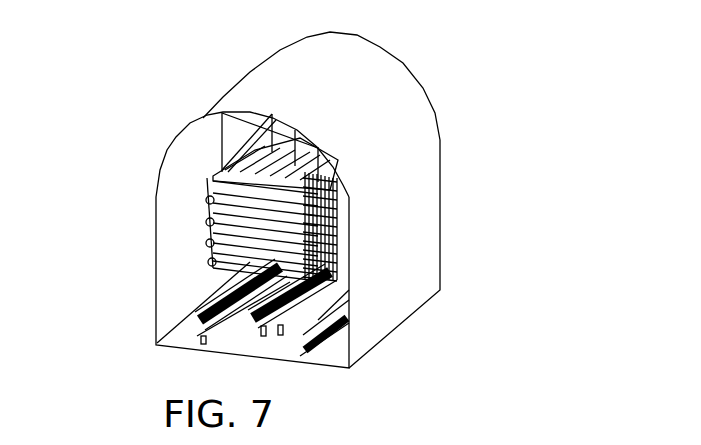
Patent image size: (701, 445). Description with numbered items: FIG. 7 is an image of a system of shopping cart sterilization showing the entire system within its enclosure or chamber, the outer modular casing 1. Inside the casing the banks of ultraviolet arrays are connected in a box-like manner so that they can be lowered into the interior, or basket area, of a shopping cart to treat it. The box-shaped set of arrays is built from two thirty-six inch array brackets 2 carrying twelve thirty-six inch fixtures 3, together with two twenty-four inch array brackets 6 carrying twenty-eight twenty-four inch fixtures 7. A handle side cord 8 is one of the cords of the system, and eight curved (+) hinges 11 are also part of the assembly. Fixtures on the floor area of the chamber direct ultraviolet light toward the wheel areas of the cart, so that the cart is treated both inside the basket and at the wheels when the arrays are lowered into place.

The outer modular casing 1 is at (387, 125).
The 36 inch array bracket 2 is at (222, 163).
The 36 inch fixture 3 is at (332, 224).
The 24 inch array bracket 6 is at (293, 172).
The 24 inch fixture 7 is at (253, 242).
The handle side cord 8 is at (246, 126).
The curved (+) hinge 11 is at (313, 343).